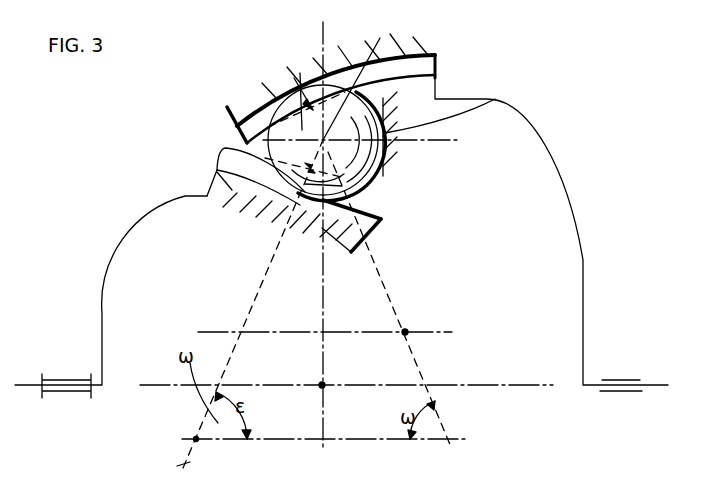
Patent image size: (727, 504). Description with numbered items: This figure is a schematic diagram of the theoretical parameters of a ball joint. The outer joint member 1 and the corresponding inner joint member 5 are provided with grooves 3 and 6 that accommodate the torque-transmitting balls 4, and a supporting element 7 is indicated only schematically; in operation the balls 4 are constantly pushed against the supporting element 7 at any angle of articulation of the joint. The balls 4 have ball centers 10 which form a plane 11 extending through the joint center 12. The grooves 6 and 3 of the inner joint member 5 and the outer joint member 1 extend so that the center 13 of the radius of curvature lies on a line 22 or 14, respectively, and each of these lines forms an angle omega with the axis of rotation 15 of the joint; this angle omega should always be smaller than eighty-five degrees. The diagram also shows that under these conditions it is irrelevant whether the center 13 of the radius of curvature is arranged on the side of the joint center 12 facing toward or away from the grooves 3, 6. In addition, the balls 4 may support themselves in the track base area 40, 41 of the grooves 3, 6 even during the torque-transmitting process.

The outer joint member 1 is at (407, 50).
The groove 3 is at (419, 70).
The balls 4 is at (290, 88).
The inner joint member 5 is at (228, 183).
The groove 6 is at (233, 160).
The supporting element 7 is at (487, 100).
The ball centers 10 is at (380, 42).
The plane 11 is at (326, 52).
The joint center 12 is at (320, 384).
The center of the radius of curvature 13 is at (405, 332).
The line 14 is at (393, 297).
The axis of rotation 15 is at (517, 383).
The line 22 is at (184, 458).
The track base area 40 is at (297, 85).
The track base area 41 is at (362, 196).